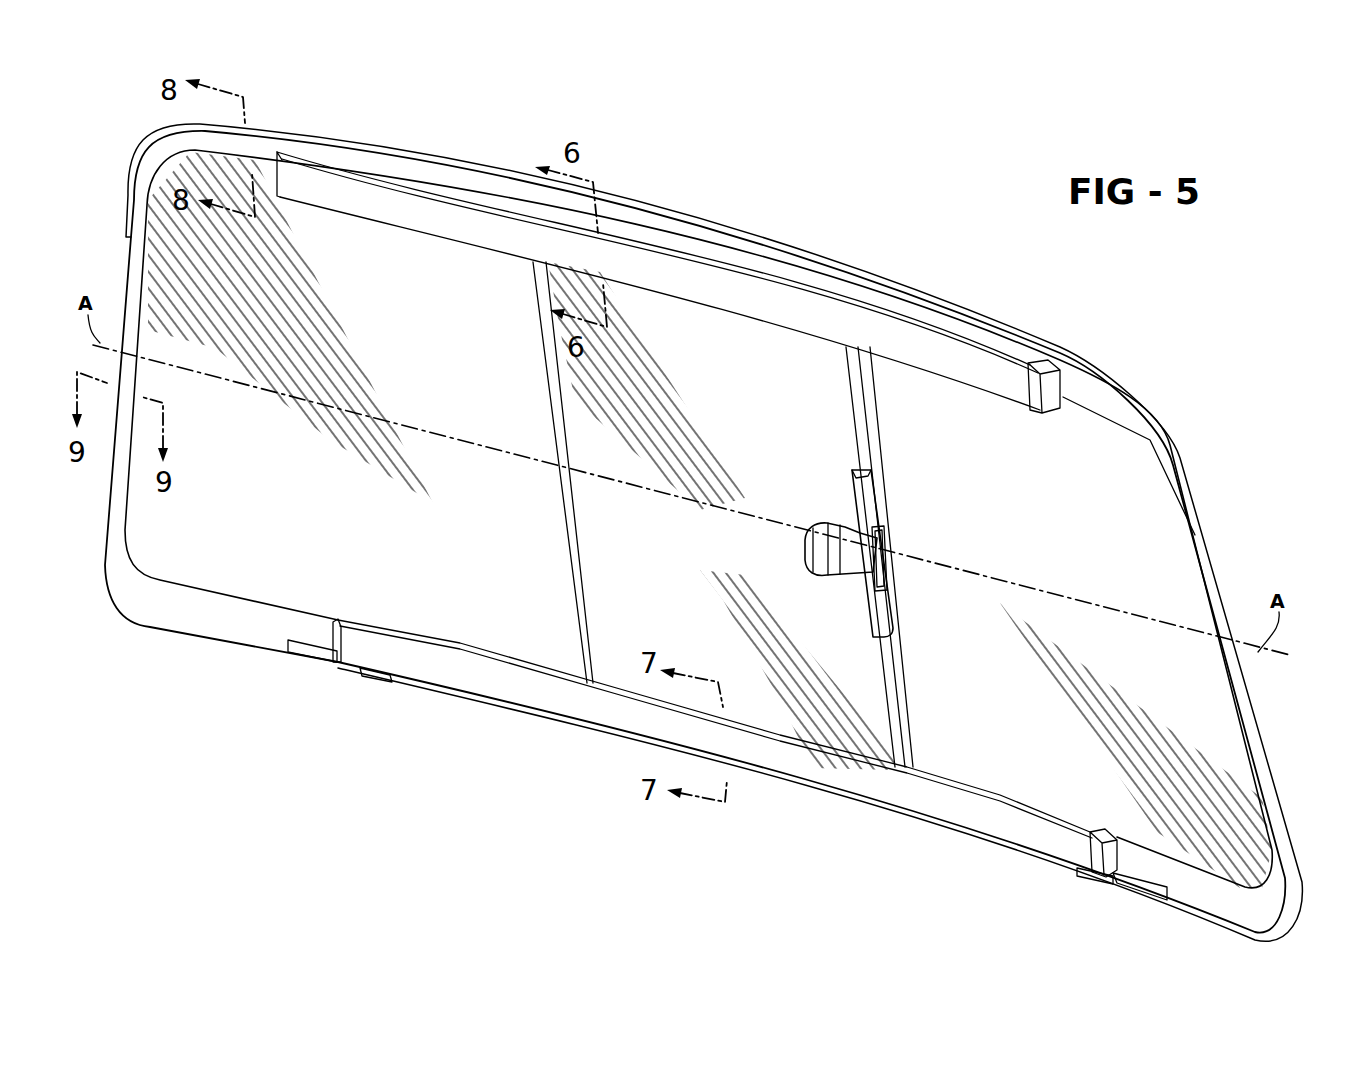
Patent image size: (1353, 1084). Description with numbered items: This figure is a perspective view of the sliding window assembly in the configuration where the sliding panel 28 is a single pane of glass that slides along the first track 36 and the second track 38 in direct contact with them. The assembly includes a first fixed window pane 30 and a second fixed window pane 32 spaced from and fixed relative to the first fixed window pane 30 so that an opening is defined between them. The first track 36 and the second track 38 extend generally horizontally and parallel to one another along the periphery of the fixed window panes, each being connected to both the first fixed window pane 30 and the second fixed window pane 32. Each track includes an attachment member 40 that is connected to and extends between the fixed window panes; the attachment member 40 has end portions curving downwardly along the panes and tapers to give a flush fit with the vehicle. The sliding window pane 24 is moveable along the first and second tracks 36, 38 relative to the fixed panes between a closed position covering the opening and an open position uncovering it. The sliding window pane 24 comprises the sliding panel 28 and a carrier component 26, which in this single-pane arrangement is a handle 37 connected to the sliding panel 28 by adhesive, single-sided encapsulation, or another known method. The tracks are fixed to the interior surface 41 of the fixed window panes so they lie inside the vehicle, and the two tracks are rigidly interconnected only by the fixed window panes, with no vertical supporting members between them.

The sliding window pane 24 is at (678, 317).
The carrier component 26 is at (828, 557).
The sliding panel 28 is at (732, 453).
The first fixed window pane 30 is at (332, 468).
The second fixed window pane 32 is at (1035, 538).
The first track 36 is at (683, 278).
The handle 37 is at (805, 553).
The second track 38 is at (517, 690).
The attachment member 40 is at (765, 283).
The interior surface 41 is at (1193, 580).